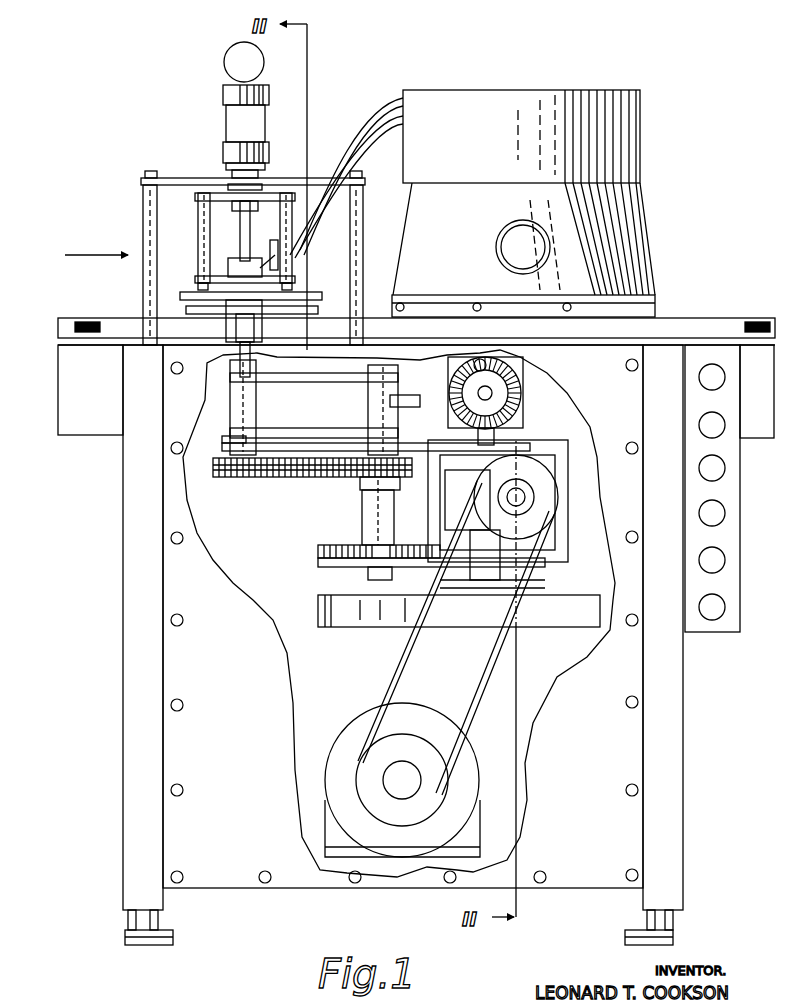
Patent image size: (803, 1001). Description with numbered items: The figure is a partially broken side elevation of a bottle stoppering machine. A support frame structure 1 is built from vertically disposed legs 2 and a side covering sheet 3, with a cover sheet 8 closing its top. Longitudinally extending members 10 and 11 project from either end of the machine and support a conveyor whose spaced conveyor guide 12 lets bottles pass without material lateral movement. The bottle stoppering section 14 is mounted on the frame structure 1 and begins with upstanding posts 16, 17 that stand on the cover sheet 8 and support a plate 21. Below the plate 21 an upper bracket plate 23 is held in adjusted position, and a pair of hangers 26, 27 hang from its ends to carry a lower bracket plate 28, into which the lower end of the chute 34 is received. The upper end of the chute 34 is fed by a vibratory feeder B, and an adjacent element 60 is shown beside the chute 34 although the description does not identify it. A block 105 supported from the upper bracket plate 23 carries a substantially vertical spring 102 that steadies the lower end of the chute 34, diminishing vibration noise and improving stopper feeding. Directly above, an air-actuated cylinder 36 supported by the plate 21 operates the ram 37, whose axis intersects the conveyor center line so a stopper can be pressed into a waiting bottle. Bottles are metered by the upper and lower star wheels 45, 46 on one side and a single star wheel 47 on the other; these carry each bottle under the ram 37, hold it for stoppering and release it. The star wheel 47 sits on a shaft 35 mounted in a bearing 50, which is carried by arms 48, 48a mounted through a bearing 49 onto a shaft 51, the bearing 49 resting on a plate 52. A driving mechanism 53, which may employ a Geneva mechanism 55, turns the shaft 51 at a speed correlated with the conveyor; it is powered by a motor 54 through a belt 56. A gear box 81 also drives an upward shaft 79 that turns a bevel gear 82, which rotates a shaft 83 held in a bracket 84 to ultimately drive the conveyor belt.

The support frame structure 1 is at (686, 682).
The legs 2 is at (133, 743).
The side covering sheet 3 is at (399, 613).
The cover sheet 8 is at (598, 350).
The longitudinally extending member 10 is at (755, 430).
The longitudinally extending member 11 is at (100, 425).
The conveyor guide 12 is at (718, 320).
The bottle stoppering section 14 is at (140, 228).
The upstanding post 16 is at (364, 208).
The upstanding post 17 is at (145, 203).
The plate 21 is at (176, 178).
The upper bracket plate 23 is at (225, 195).
The hanger 26 is at (200, 245).
The hanger 27 is at (292, 258).
The lower bracket plate 28 is at (265, 280).
The chute 34 is at (305, 232).
The shaft 35 is at (265, 358).
The pressure fluid actuated cylinder 36 is at (258, 130).
The ram 37 is at (243, 250).
The upper star wheel 45 is at (190, 293).
The lower star wheel 46 is at (200, 345).
The star wheel 47 is at (195, 310).
The arm 48 is at (357, 378).
The arm 48a is at (398, 418).
The bearing 49 is at (398, 395).
The bearing 50 is at (258, 400).
The shaft 51 is at (362, 472).
The plate 52 is at (320, 447).
The driving mechanism 53 is at (350, 518).
The motor 54 is at (350, 725).
The Geneva mechanism 55 is at (537, 625).
The belt 56 is at (410, 670).
The hose 60 is at (310, 230).
The shaft 79 is at (445, 465).
The gear box 81 is at (455, 508).
The bevel gear 82 is at (520, 403).
The shaft 83 is at (475, 393).
The bracket 84 is at (485, 385).
The spring 102 is at (274, 216).
The block 105 is at (265, 200).
The vibratory feeder B is at (648, 140).